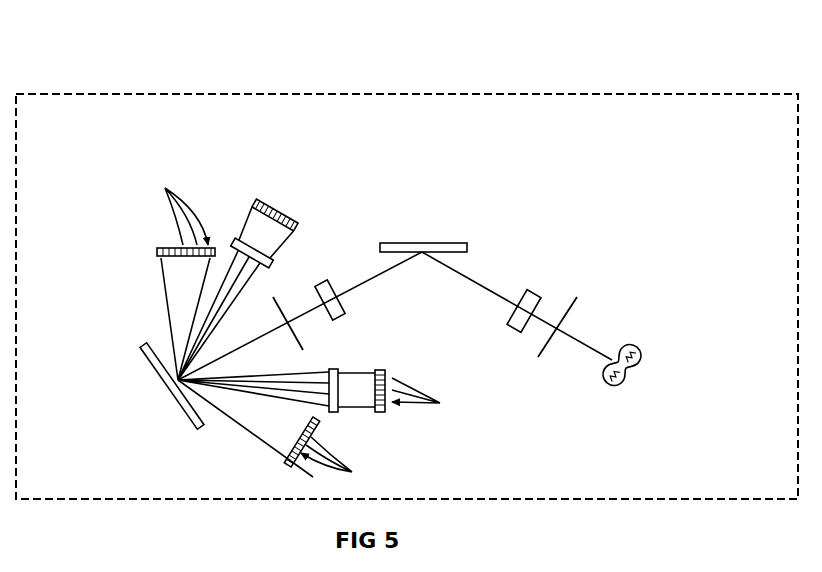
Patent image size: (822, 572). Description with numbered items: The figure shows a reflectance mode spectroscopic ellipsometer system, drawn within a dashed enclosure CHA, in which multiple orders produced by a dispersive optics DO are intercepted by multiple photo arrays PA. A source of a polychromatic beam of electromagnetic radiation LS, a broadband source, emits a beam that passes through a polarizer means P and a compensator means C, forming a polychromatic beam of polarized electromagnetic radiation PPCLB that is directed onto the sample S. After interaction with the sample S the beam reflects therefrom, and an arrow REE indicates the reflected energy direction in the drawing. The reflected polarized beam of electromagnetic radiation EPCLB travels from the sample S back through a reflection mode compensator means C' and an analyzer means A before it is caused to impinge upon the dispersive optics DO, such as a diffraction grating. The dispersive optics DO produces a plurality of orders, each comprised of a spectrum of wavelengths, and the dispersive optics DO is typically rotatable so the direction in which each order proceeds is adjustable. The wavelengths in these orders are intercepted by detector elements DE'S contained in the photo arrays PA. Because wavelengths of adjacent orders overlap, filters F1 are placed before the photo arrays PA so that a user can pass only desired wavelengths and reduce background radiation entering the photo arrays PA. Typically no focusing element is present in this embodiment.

The chamber CHA is at (628, 92).
The dispersive optics DO is at (159, 394).
The reflected polarized beam of electromagnetic radiation EPCLB is at (318, 323).
The analyzer means A is at (284, 293).
The reflection mode compensator means C' is at (343, 282).
The sample S is at (411, 240).
The polychromatic beam of polarized electromagnetic radiation PPCLB is at (597, 332).
The compensator means C is at (549, 295).
The polarizer means P is at (581, 299).
The source of a polychromatic beam of electromagnetic radiation LS is at (649, 345).
The reflected excitation energy REE is at (647, 220).
The filters F1 is at (284, 244).
The photo arrays PA is at (166, 238).
The detector elements DE'S is at (302, 331).